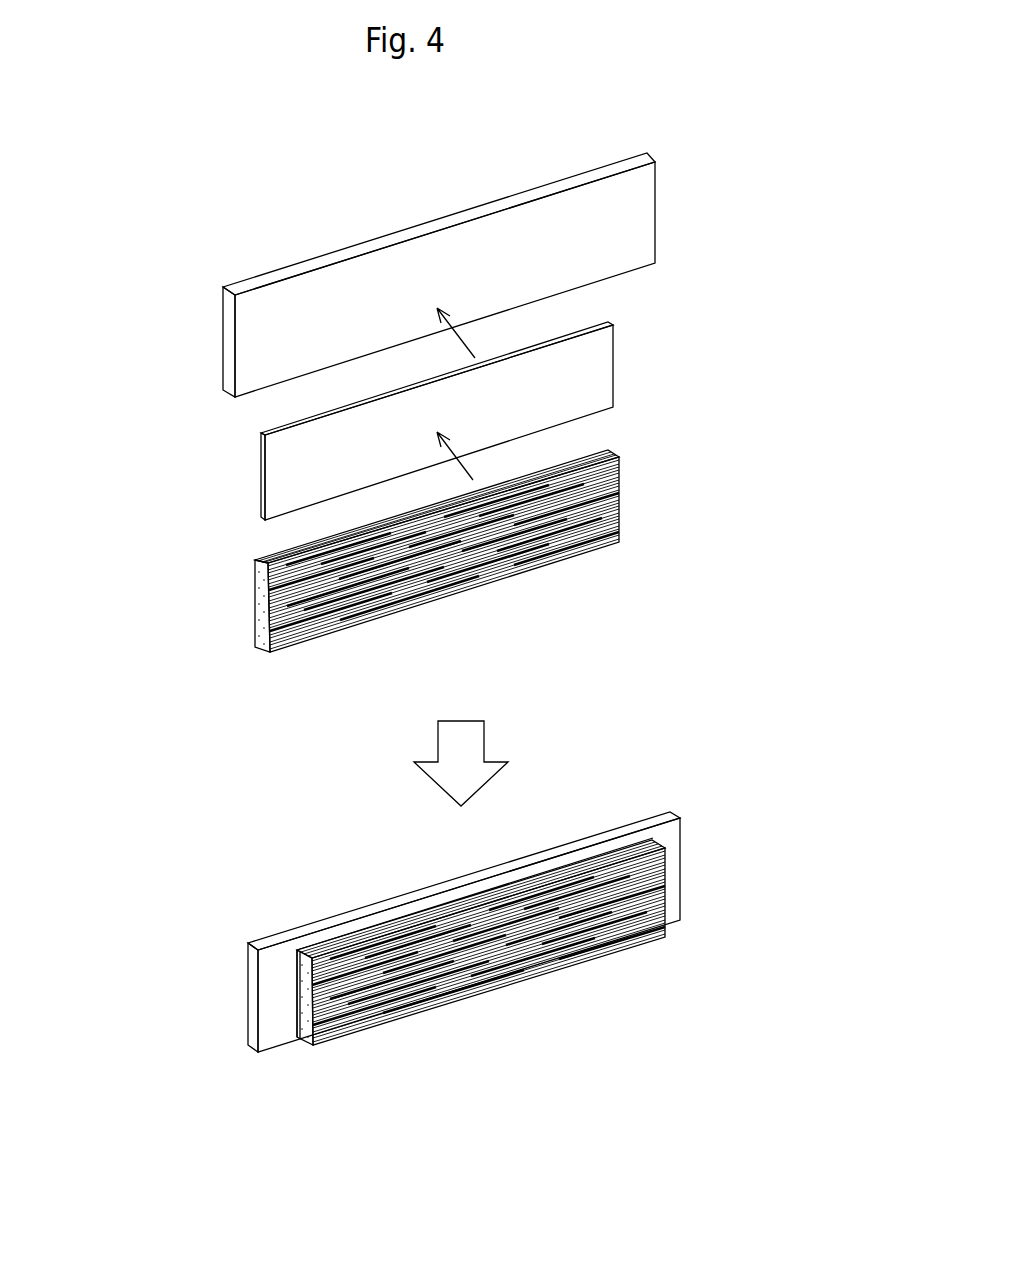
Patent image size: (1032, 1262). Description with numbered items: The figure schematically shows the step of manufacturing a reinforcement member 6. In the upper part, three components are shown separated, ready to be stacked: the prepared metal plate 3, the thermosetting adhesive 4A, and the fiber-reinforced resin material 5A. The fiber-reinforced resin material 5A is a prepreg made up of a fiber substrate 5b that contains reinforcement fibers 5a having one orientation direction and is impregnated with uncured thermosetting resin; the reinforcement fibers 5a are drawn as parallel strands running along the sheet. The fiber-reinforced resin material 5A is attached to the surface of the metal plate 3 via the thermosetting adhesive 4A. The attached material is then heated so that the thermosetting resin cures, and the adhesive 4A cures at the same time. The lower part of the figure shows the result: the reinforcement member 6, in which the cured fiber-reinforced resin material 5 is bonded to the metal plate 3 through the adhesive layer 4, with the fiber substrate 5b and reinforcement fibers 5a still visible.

The metal plate 3 is at (642, 213).
The thermosetting adhesive 4A is at (605, 377).
The adhesive layer 4 is at (542, 872).
The fiber-reinforced resin material 5A is at (612, 498).
The fiber-reinforced resin material 5 is at (652, 897).
The reinforcement fibers 5a is at (373, 587).
The fiber substrate 5b is at (603, 595).
The reinforcement member 6 is at (671, 782).